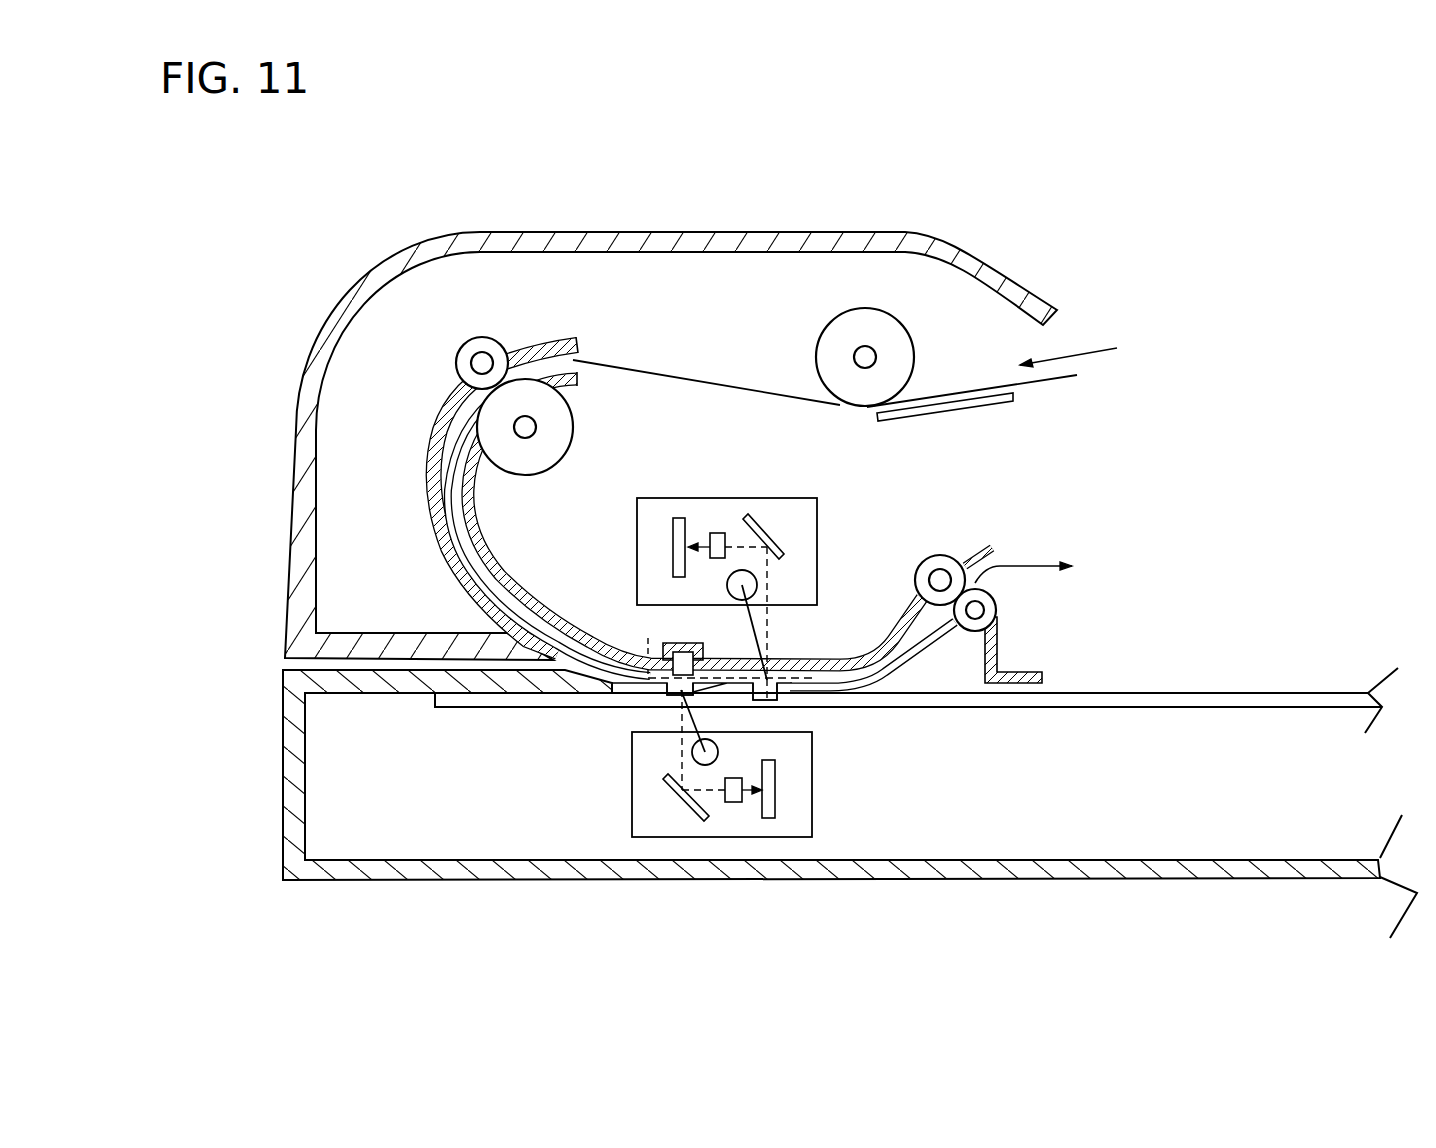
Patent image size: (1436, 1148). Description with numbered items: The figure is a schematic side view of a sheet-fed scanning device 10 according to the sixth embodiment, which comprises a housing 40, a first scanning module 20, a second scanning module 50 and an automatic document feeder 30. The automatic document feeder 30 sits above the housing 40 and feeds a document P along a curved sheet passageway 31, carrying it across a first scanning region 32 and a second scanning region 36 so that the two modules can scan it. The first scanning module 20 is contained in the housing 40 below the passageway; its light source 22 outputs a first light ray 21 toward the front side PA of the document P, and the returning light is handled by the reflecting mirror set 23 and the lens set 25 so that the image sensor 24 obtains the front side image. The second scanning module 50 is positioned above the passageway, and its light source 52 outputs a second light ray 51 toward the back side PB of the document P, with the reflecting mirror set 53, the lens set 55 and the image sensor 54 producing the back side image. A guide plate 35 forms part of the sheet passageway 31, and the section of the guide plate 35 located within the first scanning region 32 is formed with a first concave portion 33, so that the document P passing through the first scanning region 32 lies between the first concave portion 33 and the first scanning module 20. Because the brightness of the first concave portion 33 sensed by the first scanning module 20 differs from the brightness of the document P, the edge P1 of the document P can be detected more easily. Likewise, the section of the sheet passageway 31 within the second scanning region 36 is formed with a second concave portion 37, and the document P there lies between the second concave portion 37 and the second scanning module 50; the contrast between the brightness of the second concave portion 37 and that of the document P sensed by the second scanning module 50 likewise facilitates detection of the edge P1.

The sheet-fed scanning device 10 is at (700, 173).
The first scanning module 20 is at (800, 789).
The first light ray 21 is at (745, 733).
The light source 22 is at (691, 752).
The reflecting mirror set 23 is at (672, 796).
The image sensor 24 is at (772, 803).
The lens set 25 is at (733, 803).
The automatic document feeder 30 is at (268, 320).
The sheet passageway 31 is at (466, 585).
The first scanning region 32 is at (683, 700).
The first concave portion 33 is at (690, 645).
The guide plate 35 is at (528, 600).
The second scanning region 36 is at (888, 658).
The second concave portion 37 is at (777, 701).
The housing 40 is at (248, 712).
The second scanning module 50 is at (806, 528).
The second light ray 51 is at (770, 656).
The light source 52 is at (758, 587).
The reflecting mirror set 53 is at (763, 524).
The image sensor 54 is at (677, 518).
The lens set 55 is at (717, 533).
The document P is at (421, 511).
The front side PA is at (425, 470).
The back side PB is at (455, 490).
The edge P1 is at (623, 660).